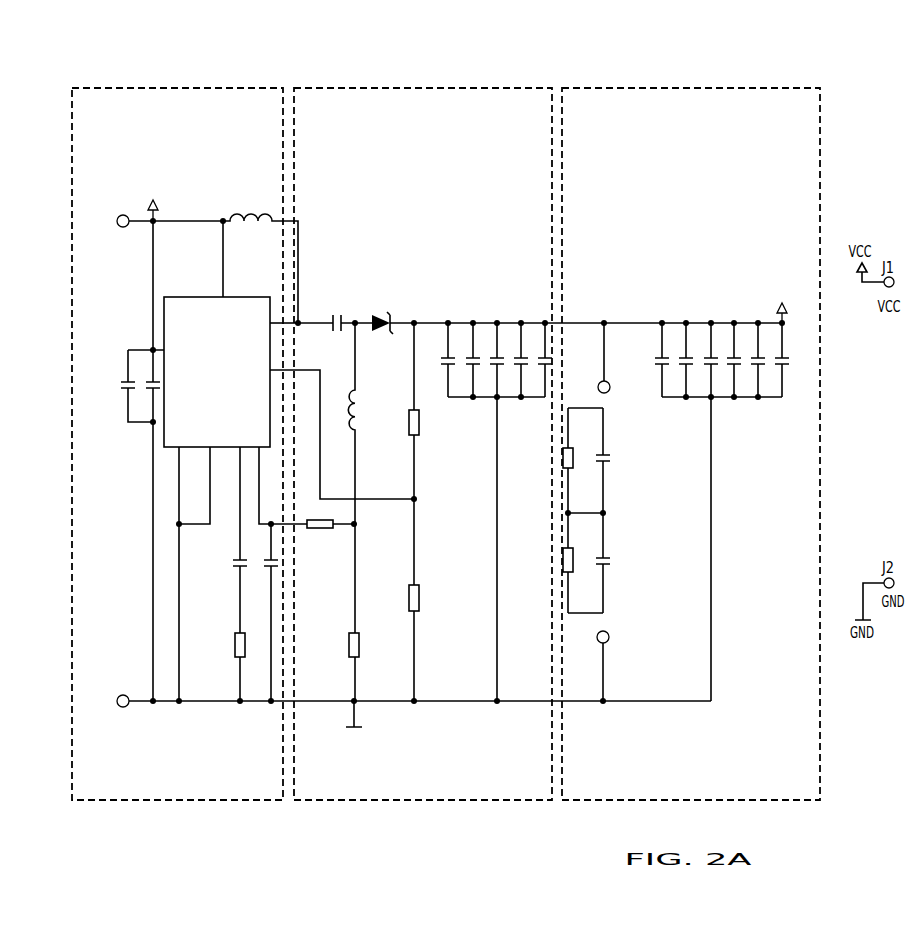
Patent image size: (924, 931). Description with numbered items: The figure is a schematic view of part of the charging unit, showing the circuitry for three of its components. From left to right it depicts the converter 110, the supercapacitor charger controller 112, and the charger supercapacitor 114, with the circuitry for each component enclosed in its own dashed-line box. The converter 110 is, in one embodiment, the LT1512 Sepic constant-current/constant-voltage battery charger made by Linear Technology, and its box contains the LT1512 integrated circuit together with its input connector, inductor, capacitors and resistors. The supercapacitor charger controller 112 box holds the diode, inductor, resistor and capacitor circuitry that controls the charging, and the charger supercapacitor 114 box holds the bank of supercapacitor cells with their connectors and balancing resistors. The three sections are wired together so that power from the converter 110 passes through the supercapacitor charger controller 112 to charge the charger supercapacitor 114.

The converter 110 is at (188, 86).
The supercapacitor charger controller 112 is at (437, 86).
The charger supercapacitor 114 is at (687, 86).